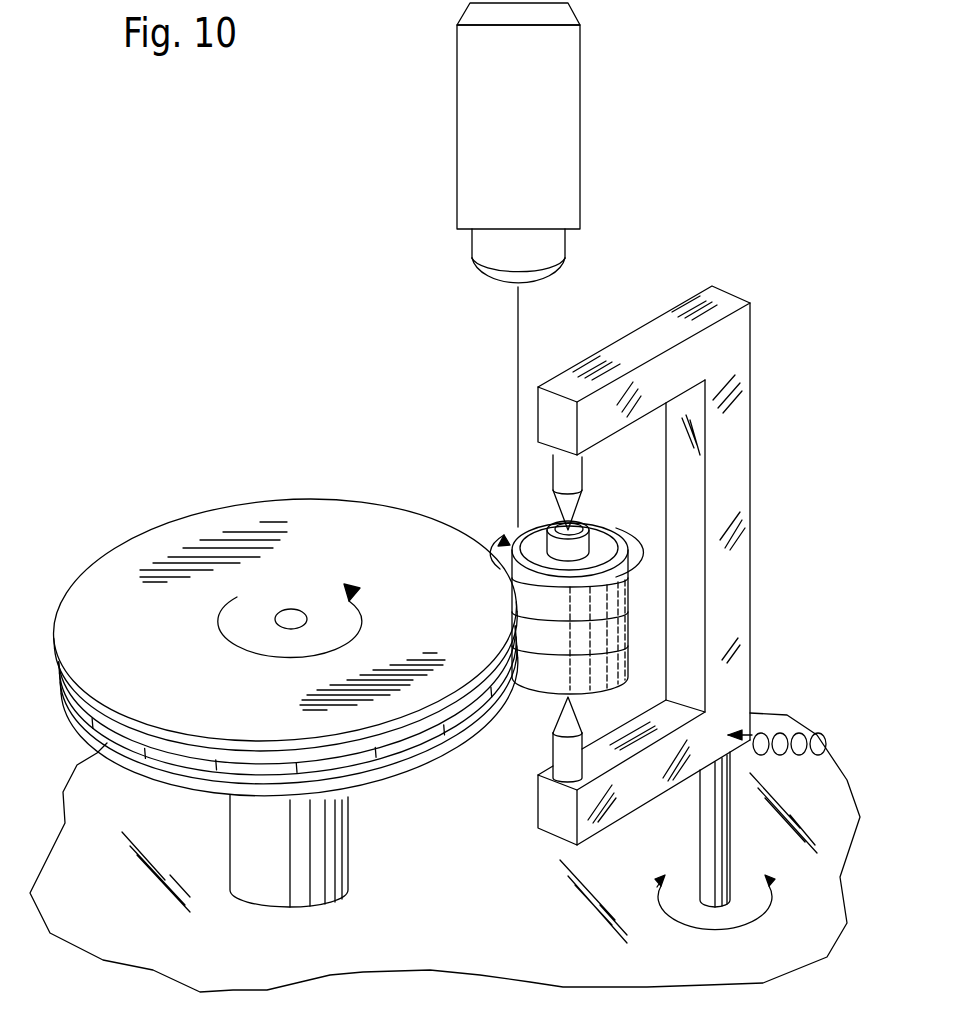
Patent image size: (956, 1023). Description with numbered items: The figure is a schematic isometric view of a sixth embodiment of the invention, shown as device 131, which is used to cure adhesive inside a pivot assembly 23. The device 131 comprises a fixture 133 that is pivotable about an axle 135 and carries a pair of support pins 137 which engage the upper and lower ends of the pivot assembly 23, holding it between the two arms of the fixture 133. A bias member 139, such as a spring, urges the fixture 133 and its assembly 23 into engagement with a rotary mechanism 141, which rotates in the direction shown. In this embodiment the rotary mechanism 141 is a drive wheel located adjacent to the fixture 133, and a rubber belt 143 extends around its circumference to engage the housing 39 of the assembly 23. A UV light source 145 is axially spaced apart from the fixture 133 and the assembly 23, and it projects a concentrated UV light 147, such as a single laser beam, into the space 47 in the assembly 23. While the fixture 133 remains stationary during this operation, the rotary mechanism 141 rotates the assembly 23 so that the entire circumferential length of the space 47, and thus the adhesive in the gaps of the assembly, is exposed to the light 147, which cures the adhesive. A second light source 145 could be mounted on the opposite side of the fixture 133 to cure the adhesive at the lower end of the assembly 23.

The device 131 is at (370, 202).
The UV light source 145 is at (470, 93).
The concentrated UV light 147 is at (518, 350).
The fixture 133 is at (738, 341).
The support pins 137 is at (567, 468).
The space 47 is at (600, 535).
The pivot assembly 23 is at (640, 593).
The housing 39 is at (600, 632).
The bias member 139 is at (826, 745).
The axle 135 is at (710, 838).
The rubber belt 143 is at (405, 770).
The rotary mechanism 141 is at (165, 541).